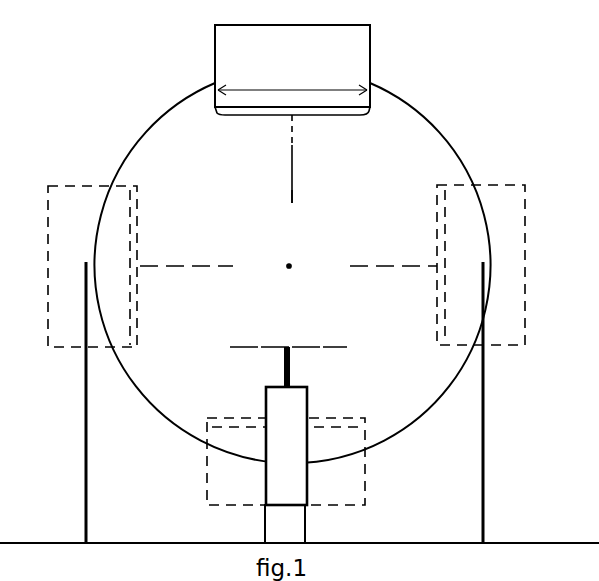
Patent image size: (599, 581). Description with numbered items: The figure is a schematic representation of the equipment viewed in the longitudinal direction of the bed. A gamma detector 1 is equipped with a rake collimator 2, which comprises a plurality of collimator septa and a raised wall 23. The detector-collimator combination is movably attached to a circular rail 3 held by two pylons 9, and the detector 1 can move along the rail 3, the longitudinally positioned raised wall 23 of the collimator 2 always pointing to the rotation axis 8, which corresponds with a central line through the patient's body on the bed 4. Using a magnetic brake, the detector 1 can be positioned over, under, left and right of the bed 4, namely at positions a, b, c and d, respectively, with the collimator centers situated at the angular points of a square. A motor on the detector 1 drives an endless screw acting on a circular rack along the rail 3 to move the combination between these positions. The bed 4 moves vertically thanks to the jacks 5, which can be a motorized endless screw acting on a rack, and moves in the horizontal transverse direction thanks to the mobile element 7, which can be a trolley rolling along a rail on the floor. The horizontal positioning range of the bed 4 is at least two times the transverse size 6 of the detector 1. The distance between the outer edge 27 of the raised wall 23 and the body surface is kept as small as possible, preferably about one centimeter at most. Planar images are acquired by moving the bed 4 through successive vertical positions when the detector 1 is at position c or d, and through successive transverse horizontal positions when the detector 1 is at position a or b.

The gamma detector 1 is at (292, 66).
The rake collimator 2 is at (351, 121).
The circular rail 3 is at (155, 122).
The bed 4 is at (288, 332).
The jacks 5 is at (286, 446).
The transverse size 6 is at (292, 78).
The mobile element 7 is at (285, 524).
The rotation axis 8 is at (289, 260).
The pylons 9 is at (84, 440).
The raised wall 23 is at (293, 163).
The outer edge of the raised wall 27 is at (287, 205).
The position over the bed a is at (315, 94).
The position under the bed b is at (312, 465).
The position left of the bed c is at (113, 292).
The position right of the bed d is at (468, 246).